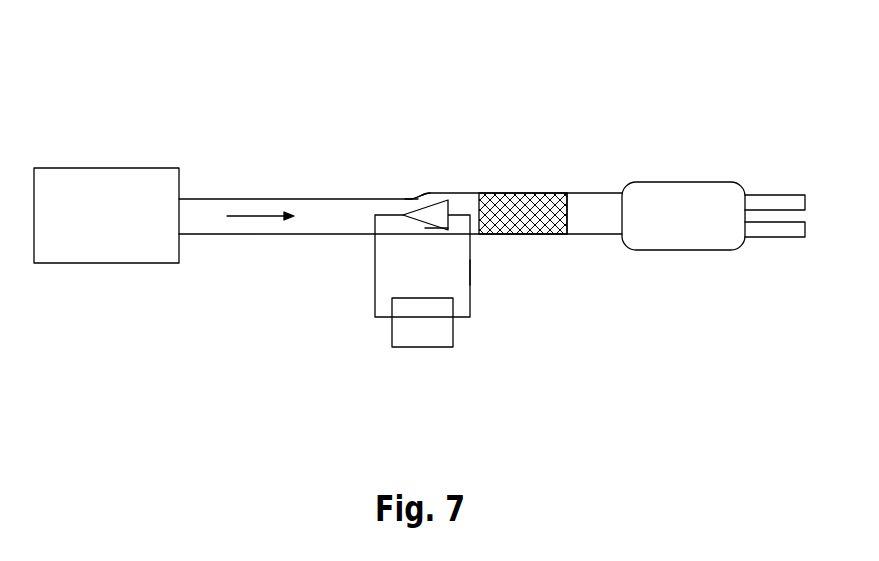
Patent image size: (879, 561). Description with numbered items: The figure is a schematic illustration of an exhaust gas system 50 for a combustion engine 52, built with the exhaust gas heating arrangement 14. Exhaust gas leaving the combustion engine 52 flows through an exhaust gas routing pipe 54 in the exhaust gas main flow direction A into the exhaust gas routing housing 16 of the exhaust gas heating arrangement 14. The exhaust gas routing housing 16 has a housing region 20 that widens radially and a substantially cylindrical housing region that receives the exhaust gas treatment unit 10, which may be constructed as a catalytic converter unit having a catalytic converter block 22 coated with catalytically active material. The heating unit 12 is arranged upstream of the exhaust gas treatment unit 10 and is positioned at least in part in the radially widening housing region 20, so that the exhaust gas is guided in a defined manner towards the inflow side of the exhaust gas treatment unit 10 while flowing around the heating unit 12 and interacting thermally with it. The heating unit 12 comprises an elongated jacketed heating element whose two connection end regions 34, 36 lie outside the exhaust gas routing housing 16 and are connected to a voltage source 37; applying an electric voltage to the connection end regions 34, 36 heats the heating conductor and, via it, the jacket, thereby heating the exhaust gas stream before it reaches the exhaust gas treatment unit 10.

The exhaust gas system 50 is at (700, 105).
The combustion engine 52 is at (105, 263).
The exhaust gas routing pipe 54 is at (252, 198).
The exhaust gas heating arrangement 14 is at (436, 183).
The housing region 20 is at (412, 197).
The exhaust gas treatment unit 10 is at (530, 176).
The catalytic converter block 22 is at (570, 193).
The connection end region 34 is at (373, 300).
The heating unit 12 is at (422, 232).
The exhaust gas routing housing 16 is at (428, 233).
The connection end region 36 is at (470, 272).
The voltage source 37 is at (420, 348).
The exhaust gas main flow direction A is at (258, 217).